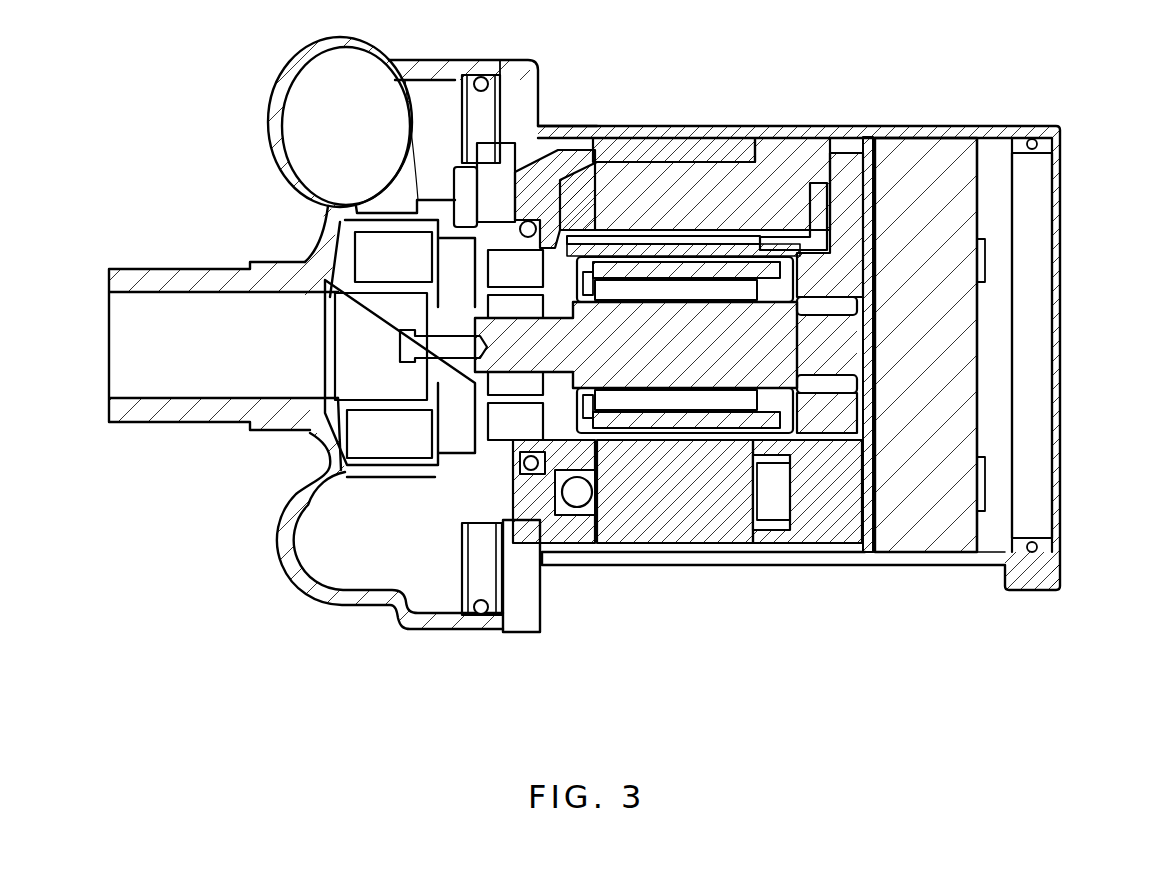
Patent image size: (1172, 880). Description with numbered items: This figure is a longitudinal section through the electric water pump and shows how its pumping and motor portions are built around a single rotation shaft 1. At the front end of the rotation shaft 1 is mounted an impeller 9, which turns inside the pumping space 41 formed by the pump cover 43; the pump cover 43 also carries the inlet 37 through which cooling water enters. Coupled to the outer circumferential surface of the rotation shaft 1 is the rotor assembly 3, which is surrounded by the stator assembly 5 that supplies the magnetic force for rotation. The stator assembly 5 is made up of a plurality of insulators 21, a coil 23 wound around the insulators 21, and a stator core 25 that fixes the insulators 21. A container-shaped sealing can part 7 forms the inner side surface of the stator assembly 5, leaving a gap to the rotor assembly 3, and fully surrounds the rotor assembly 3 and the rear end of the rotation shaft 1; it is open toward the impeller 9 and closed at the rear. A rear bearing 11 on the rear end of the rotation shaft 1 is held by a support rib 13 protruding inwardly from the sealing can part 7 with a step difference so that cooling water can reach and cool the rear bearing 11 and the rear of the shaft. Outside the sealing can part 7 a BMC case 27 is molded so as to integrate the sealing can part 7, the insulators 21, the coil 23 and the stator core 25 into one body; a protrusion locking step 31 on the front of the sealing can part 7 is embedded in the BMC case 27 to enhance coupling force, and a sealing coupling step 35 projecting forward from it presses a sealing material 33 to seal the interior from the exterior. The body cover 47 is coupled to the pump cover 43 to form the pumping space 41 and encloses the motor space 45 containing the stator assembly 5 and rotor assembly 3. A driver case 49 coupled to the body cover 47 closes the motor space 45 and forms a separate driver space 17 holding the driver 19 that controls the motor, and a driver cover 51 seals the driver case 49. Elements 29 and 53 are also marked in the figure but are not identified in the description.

The rotation shaft 1 is at (712, 378).
The rotor assembly 3 is at (343, 347).
The stator assembly 5 is at (480, 614).
The sealing can part 7 is at (567, 237).
The impeller 9 is at (320, 442).
The rear bearing 11 is at (872, 374).
The support rib 13 is at (830, 270).
The driver space 17 is at (994, 152).
The driver 19 is at (937, 532).
The insulators 21 is at (773, 517).
The coil 23 is at (783, 497).
The stator core 25 is at (672, 152).
The BMC case 27 is at (778, 160).
The terminal 29 is at (823, 205).
The protrusion locking step 31 is at (585, 232).
The sealing material 33 is at (515, 215).
The sealing coupling step 35 is at (495, 205).
The inlet 37 is at (150, 298).
The pumping space 41 is at (448, 287).
The pump cover 43 is at (283, 78).
The motor space 45 is at (385, 482).
The body cover 47 is at (733, 134).
The driver case 49 is at (936, 136).
The driver cover 51 is at (1060, 198).
The flow passage 53 is at (458, 268).